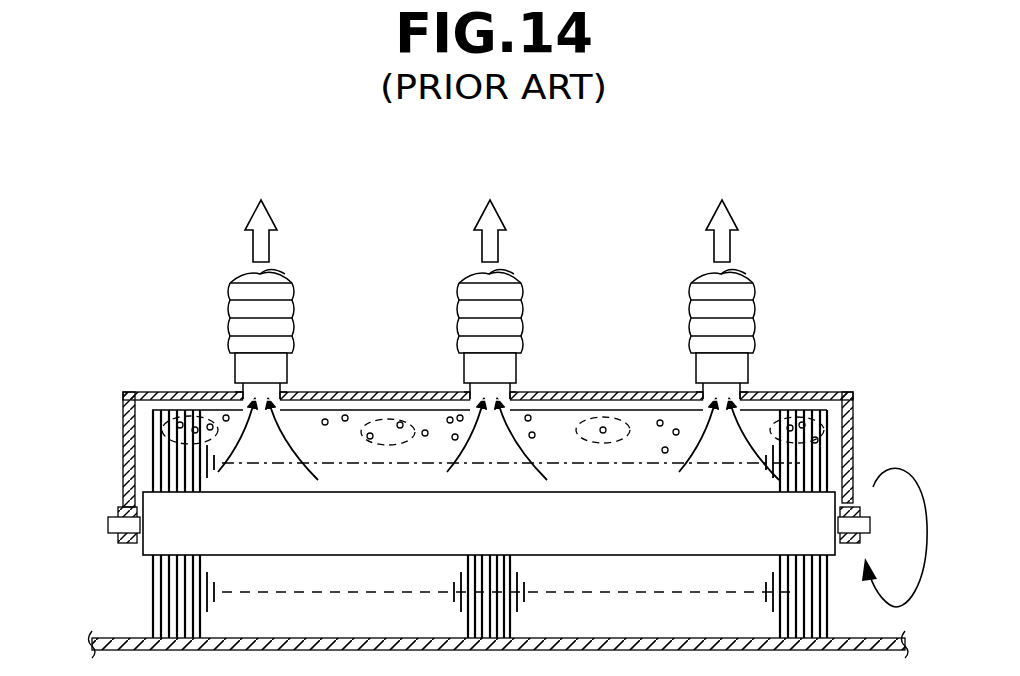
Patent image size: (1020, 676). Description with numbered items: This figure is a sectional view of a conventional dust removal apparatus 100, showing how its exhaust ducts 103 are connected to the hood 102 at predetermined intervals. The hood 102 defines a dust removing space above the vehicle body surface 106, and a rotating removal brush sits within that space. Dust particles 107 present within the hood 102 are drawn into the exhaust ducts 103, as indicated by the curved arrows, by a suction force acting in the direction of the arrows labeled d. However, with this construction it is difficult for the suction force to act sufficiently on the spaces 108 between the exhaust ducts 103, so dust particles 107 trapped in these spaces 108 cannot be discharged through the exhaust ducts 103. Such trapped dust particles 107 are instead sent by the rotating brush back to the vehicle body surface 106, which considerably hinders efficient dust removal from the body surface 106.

The dust removal apparatus 100 is at (823, 200).
The hood 102 is at (337, 392).
The exhaust ducts 103 is at (230, 285).
The vehicle body surface 106 is at (125, 637).
The dust particles 107 is at (215, 414).
The spaces 108 is at (179, 416).